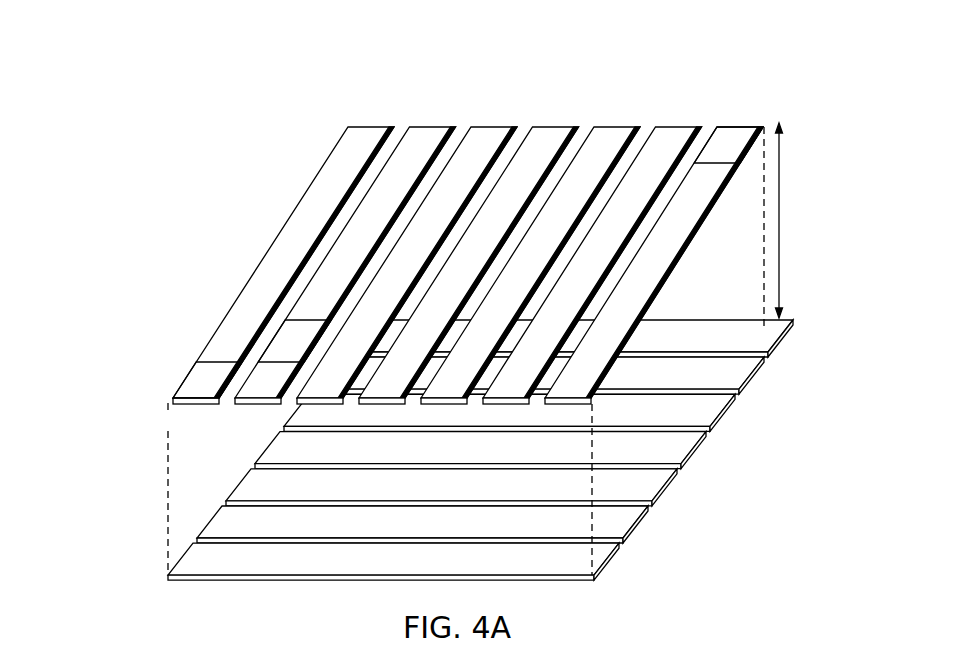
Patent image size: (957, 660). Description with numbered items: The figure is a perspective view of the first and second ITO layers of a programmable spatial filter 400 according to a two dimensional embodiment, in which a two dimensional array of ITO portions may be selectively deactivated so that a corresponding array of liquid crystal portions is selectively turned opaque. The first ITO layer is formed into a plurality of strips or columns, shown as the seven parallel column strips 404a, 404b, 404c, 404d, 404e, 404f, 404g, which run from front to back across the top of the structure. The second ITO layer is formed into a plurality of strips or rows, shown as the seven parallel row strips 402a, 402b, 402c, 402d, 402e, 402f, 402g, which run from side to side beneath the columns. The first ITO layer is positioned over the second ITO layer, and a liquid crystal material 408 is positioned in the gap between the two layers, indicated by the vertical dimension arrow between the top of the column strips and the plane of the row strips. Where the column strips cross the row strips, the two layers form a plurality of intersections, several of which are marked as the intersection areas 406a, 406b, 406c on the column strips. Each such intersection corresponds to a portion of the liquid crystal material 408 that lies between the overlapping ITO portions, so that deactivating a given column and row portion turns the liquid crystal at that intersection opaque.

The electrode array assembly 400 is at (210, 101).
The second ITO layer strip 402a is at (792, 338).
The second ITO layer strip 402b is at (769, 371).
The second ITO layer strip 402c is at (284, 419).
The second ITO layer strip 402d is at (259, 454).
The second ITO layer strip 402e is at (229, 489).
The second ITO layer strip 402f is at (203, 524).
The second ITO layer strip 402g is at (171, 561).
The first ITO layer strip 404a is at (376, 118).
The first ITO layer strip 404b is at (438, 118).
The first ITO layer strip 404c is at (504, 118).
The first ITO layer strip 404d is at (564, 118).
The first ITO layer strip 404e is at (626, 118).
The first ITO layer strip 404f is at (688, 118).
The first ITO layer strip 404g is at (754, 118).
The intersection 406a is at (208, 377).
The intersection 406b is at (288, 333).
The intersection 406c is at (733, 150).
The liquid crystal material 408 is at (801, 220).